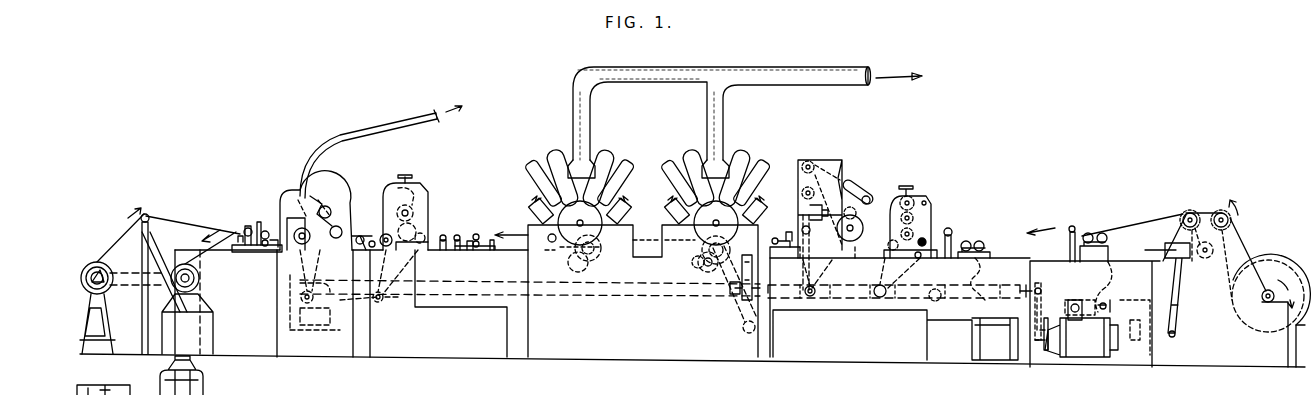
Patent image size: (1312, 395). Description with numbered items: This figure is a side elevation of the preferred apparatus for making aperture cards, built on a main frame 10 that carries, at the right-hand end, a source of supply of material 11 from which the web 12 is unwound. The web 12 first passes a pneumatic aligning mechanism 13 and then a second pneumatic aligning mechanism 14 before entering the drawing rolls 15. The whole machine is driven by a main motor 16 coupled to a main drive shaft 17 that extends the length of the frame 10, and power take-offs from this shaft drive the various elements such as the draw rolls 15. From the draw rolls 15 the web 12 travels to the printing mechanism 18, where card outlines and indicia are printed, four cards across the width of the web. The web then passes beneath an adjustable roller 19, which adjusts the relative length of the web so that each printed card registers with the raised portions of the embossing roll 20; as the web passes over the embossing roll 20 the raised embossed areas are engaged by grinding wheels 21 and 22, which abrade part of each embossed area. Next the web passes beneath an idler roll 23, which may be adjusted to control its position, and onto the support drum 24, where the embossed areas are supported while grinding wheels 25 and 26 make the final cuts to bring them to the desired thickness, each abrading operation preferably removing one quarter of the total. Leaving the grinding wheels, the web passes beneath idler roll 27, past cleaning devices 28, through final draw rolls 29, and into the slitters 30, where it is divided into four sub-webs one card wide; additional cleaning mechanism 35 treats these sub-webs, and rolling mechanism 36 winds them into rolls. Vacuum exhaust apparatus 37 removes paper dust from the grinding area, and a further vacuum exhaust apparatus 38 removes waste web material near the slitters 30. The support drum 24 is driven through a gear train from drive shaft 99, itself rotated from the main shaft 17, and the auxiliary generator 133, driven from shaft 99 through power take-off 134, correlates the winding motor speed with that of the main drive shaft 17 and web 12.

The main frame 10 is at (1251, 310).
The source of supply of material 11 is at (1225, 246).
The web of material 12 is at (1143, 232).
The pneumatic aligning mechanism 13 is at (1097, 252).
The second pneumatic aligning mechanism 14 is at (988, 252).
The drawing rolls 15 is at (927, 197).
The main motor 16 is at (1092, 309).
The main drive shaft 17 is at (902, 302).
The printing mechanism 18 is at (838, 162).
The adjustable roller 19 is at (775, 238).
The embossing roll 20 is at (686, 258).
The grinding wheel 21 is at (728, 198).
The grinding wheel 22 is at (698, 197).
The idler roll 23 is at (662, 246).
The support drum 24 is at (579, 251).
The grinding wheel 25 is at (597, 195).
The grinding wheel 26 is at (560, 195).
The idler roll 27 is at (551, 243).
The cleaning devices 28 is at (468, 238).
The final draw rolls 29 is at (428, 199).
The slitters 30 is at (334, 228).
The cleaning mechanism 35 is at (243, 230).
The rolling mechanism 36 is at (133, 304).
The vacuum exhaust apparatus 37 is at (705, 76).
The vacuum exhaust apparatus 38 is at (371, 130).
The drive shaft 99 is at (712, 233).
The auxiliary generator 133 is at (348, 305).
The power take-off 134 is at (292, 297).